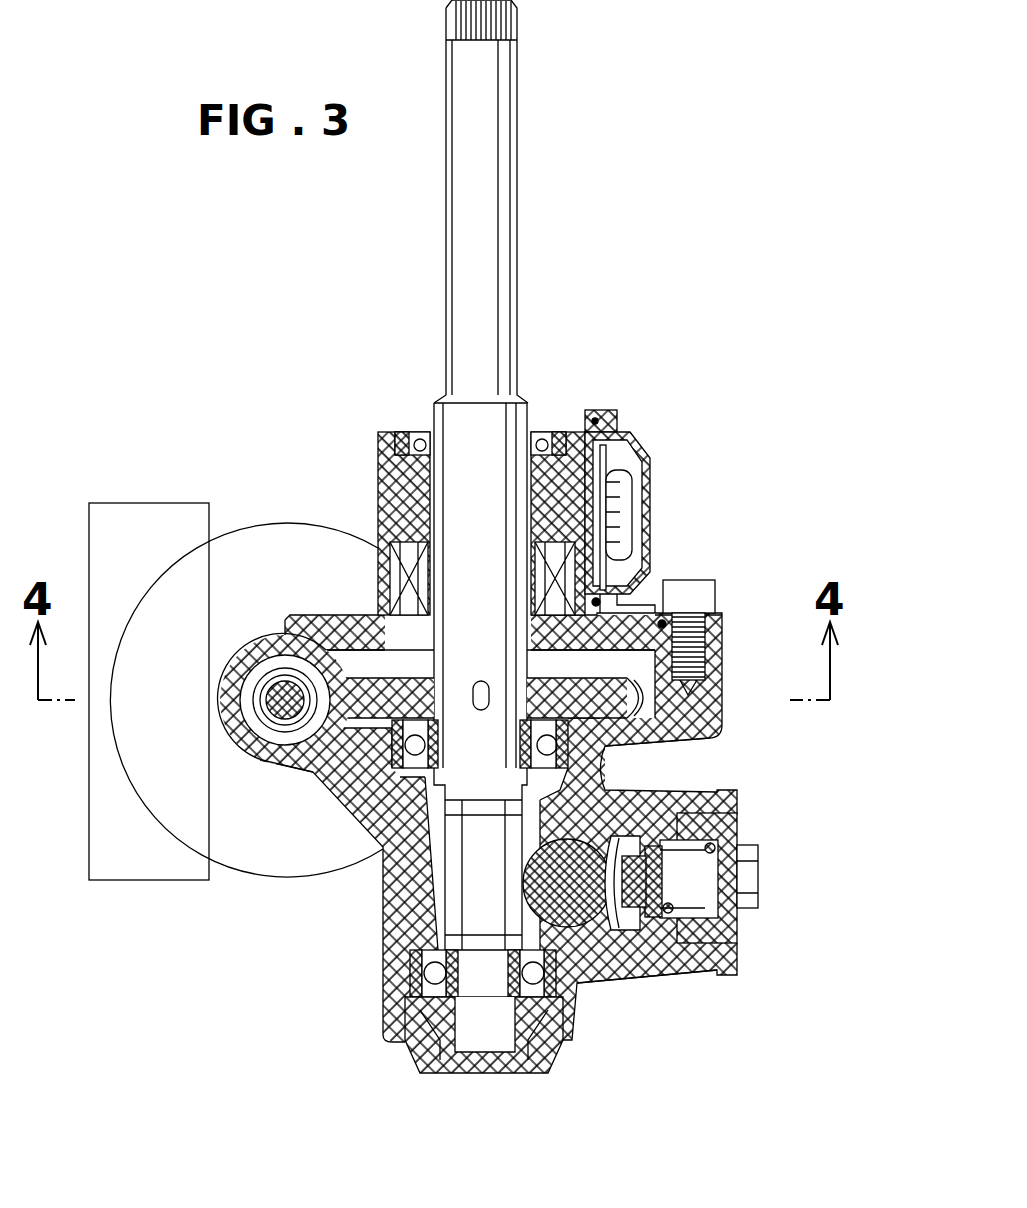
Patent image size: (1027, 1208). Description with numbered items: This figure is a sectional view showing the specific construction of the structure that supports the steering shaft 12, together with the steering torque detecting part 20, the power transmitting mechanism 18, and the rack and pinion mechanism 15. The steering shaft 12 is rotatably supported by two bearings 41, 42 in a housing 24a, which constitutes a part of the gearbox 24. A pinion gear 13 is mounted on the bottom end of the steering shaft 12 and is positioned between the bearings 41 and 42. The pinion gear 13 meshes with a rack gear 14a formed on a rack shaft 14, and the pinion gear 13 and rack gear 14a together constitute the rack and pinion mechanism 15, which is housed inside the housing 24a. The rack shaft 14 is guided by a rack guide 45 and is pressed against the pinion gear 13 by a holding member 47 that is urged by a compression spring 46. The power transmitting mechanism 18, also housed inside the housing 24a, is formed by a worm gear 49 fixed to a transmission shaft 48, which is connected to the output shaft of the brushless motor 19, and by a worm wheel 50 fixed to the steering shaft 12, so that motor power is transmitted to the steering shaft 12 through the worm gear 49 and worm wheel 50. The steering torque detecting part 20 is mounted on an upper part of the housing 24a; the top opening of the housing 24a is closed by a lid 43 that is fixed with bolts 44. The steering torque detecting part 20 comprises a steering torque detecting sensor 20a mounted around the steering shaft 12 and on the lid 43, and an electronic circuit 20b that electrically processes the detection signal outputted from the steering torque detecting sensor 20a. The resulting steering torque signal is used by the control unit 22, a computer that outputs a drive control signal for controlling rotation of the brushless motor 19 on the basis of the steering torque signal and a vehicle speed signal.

The steering shaft 12 is at (505, 210).
The pinion gear 13 is at (450, 858).
The rack shaft 14 is at (630, 973).
The rack gear 14a is at (600, 977).
The rack and pinion mechanism 15 is at (392, 905).
The power transmitting mechanism 18 is at (285, 765).
The brushless motor 19 is at (255, 568).
The steering torque detecting part 20 is at (535, 479).
The steering torque detecting sensor 20a is at (378, 565).
The electronic circuit 20b is at (625, 498).
The control unit 22 is at (143, 512).
The gearbox 24 is at (742, 795).
The housing 24a is at (703, 725).
The bearing 41 is at (345, 800).
The bearing 42 is at (590, 1030).
The lid 43 is at (645, 620).
The bolts 44 is at (695, 578).
The rack guide 45 is at (737, 937).
The compression spring 46 is at (727, 835).
The holding member 47 is at (660, 797).
The transmission shaft 48 is at (278, 733).
The worm gear 49 is at (265, 680).
The worm wheel 50 is at (378, 690).